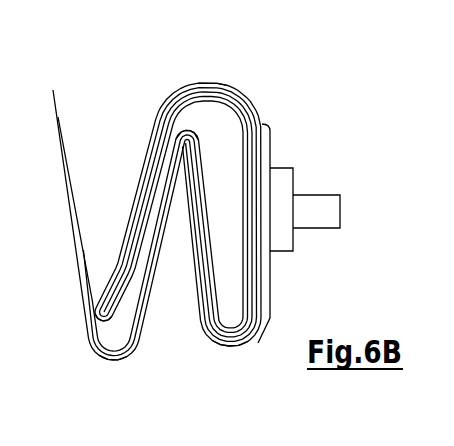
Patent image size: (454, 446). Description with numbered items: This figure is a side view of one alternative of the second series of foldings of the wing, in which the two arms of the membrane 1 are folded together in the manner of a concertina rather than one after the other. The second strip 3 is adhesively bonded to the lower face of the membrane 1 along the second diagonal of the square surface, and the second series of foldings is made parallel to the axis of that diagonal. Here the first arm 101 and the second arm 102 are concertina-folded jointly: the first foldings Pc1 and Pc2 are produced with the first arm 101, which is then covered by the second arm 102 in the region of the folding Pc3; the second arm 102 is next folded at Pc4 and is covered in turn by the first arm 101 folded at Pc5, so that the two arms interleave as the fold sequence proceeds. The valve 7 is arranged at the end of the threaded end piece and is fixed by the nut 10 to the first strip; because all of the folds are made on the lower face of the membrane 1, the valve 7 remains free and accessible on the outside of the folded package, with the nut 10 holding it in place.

The membrane 1 is at (269, 128).
The second strip 3 is at (259, 102).
The valve 7 is at (330, 210).
The nut 10 is at (287, 180).
The first arm 101 is at (148, 313).
The second arm 102 is at (155, 108).
The first folding Pc1 is at (240, 342).
The first folding Pc2 is at (193, 138).
The folding Pc3 is at (203, 85).
The folding Pc4 is at (110, 297).
The folding Pc5 is at (117, 363).